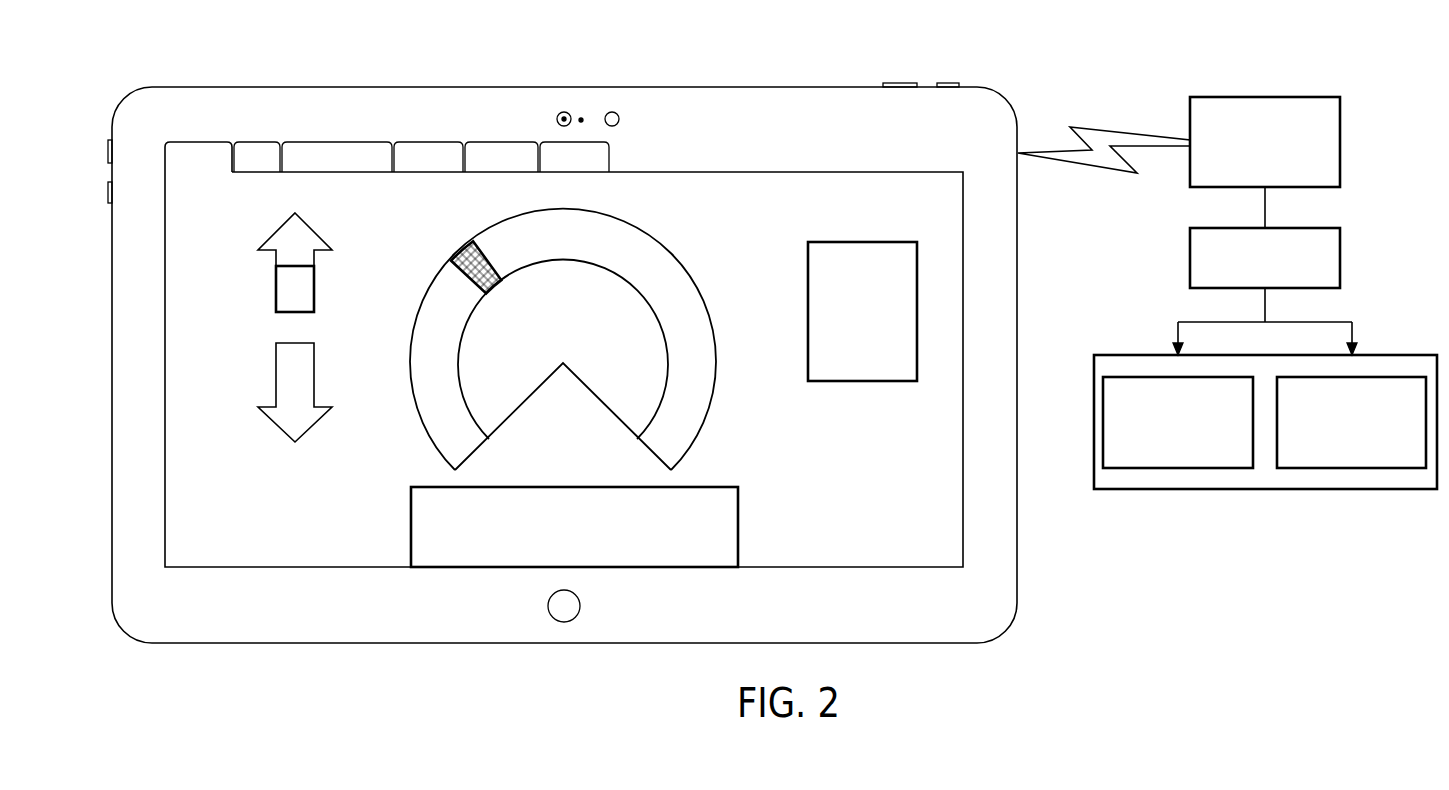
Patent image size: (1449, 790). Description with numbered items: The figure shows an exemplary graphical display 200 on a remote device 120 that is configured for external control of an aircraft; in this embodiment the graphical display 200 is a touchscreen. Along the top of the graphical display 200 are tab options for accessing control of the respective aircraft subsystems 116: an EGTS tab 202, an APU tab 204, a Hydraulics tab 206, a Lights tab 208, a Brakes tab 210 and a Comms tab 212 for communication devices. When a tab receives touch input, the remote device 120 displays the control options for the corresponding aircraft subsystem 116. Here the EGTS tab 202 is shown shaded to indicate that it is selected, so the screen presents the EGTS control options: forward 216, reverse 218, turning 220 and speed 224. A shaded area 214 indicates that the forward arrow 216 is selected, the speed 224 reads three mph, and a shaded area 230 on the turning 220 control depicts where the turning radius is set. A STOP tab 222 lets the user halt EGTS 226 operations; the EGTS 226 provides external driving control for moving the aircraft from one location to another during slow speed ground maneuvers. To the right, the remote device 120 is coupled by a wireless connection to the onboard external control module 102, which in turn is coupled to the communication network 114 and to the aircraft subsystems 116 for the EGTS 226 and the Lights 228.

The onboard external control module 102 is at (1267, 97).
The communication network 114 is at (1340, 262).
The aircraft subsystems 116 is at (1272, 489).
The remote device 120 is at (287, 87).
The graphical display 200 is at (738, 193).
The EGTS tab 202 is at (200, 172).
The APU tab 204 is at (255, 173).
The Hydraulics tab 206 is at (348, 172).
The Lights tab 208 is at (430, 172).
The Brakes tab 210 is at (485, 172).
The Comms tab 212 is at (600, 172).
The shaded area 214 is at (314, 292).
The forward arrow 216 is at (330, 246).
The reverse 218 is at (314, 372).
The turning 220 is at (703, 428).
The STOP tab 222 is at (738, 530).
The speed 224 is at (863, 242).
The EGTS 226 is at (1178, 468).
The Lights 228 is at (1352, 468).
The shaded area 230 is at (493, 288).